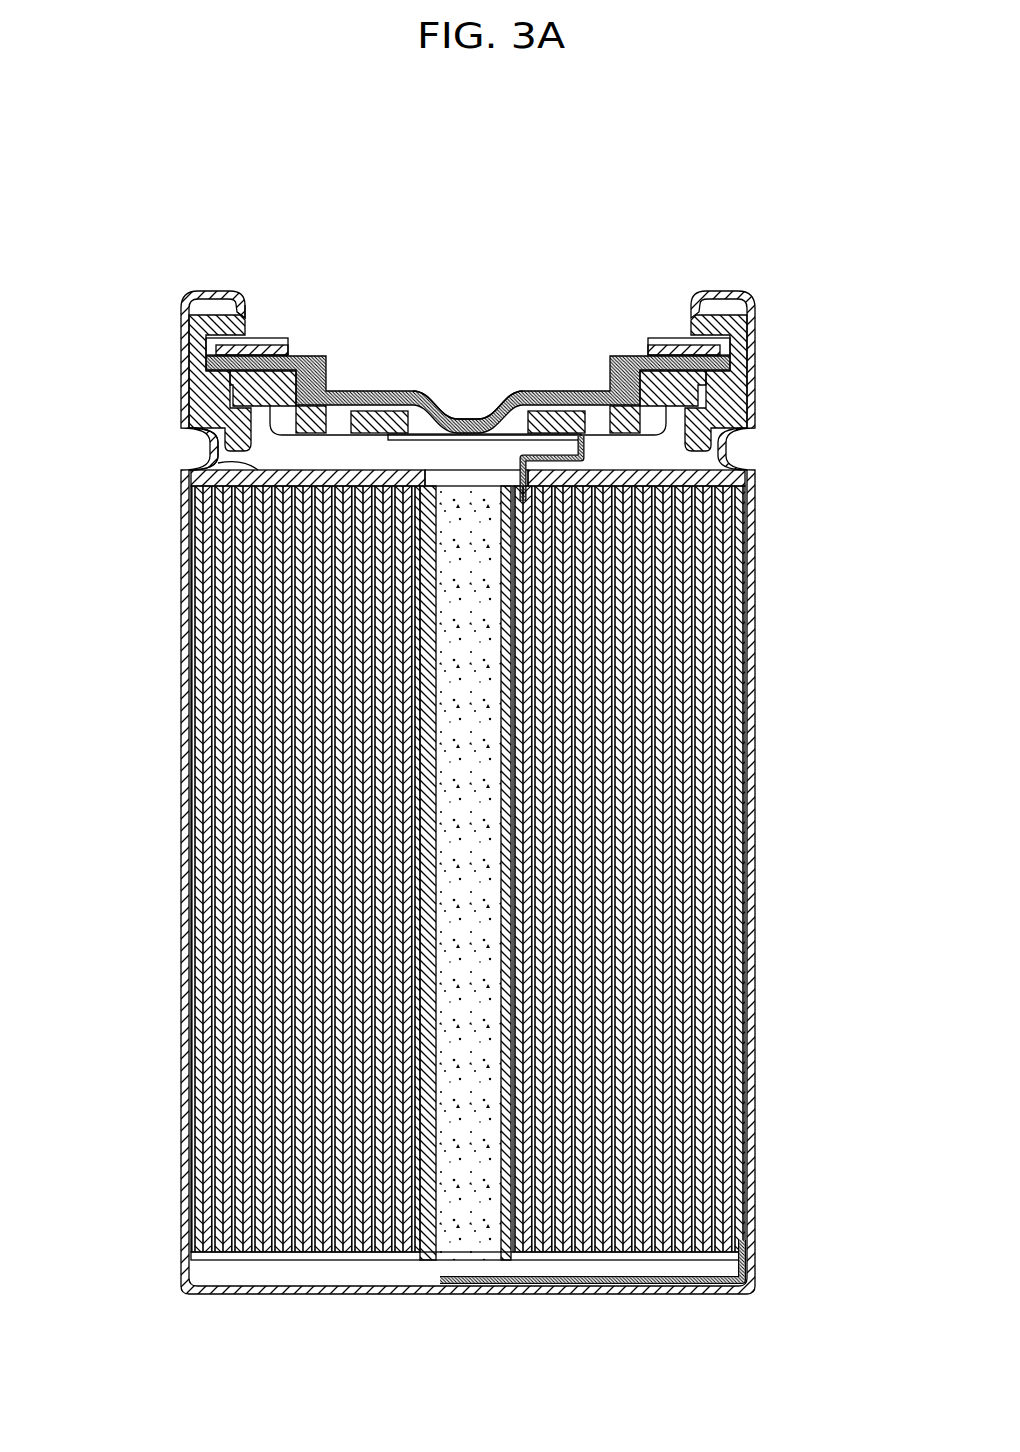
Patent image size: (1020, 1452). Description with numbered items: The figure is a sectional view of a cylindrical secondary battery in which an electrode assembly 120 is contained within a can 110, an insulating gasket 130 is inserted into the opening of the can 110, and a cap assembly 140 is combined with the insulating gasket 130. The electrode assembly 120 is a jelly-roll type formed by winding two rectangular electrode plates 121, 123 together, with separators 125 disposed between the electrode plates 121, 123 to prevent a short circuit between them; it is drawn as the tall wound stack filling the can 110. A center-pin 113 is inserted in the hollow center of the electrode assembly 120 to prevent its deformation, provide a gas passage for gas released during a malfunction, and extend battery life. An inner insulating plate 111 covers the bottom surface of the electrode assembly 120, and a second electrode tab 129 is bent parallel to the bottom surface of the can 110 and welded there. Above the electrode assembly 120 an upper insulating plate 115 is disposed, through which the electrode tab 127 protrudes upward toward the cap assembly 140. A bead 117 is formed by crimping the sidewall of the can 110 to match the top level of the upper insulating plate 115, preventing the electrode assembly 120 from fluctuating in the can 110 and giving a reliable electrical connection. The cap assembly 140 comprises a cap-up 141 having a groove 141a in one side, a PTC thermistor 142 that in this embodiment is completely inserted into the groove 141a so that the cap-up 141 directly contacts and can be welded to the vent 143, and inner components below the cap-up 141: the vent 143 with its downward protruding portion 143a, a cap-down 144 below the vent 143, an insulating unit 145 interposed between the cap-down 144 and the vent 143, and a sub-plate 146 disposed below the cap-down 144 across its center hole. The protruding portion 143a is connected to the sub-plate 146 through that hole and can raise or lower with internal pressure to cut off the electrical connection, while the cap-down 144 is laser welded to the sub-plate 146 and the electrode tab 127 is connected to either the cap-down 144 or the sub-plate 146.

The can 110 is at (180, 586).
The inner insulating plate 111 is at (326, 1246).
The center-pin 113 is at (437, 650).
The upper insulating plate 115 is at (245, 458).
The bead 117 is at (196, 432).
The electrode assembly 120 is at (830, 440).
The electrode plate 121 is at (700, 690).
The electrode plate 123 is at (720, 598).
The separator 125 is at (730, 548).
The electrode tab 127 is at (578, 440).
The second electrode tab 129 is at (657, 1280).
The insulating gasket 130 is at (720, 274).
The cap assembly 140 is at (270, 143).
The cap-up 141 is at (440, 427).
The groove 141a is at (237, 305).
The PTC thermistor 142 is at (655, 330).
The vent 143 is at (323, 360).
The protruding portion 143a is at (445, 410).
The cap-down 144 is at (373, 410).
The insulating unit 145 is at (283, 330).
The sub-plate 146 is at (517, 395).